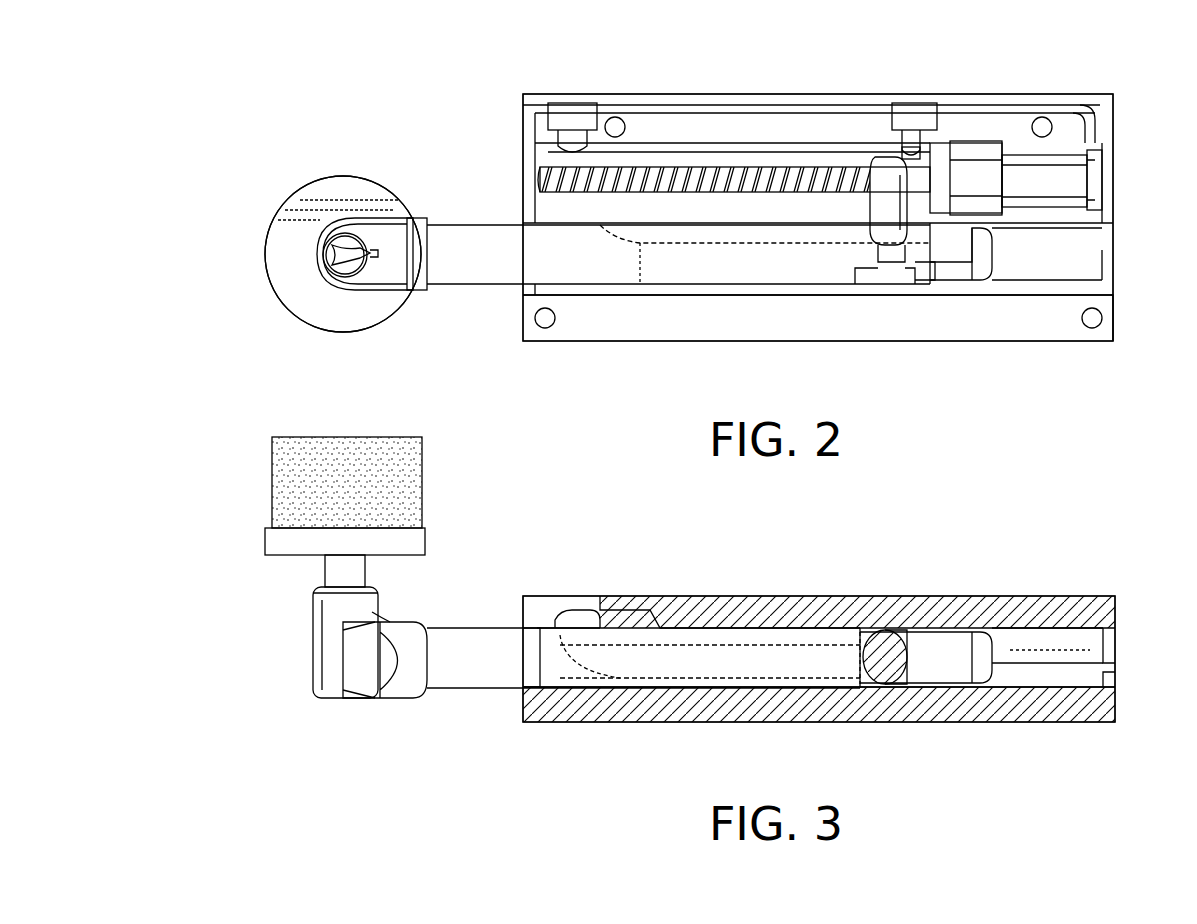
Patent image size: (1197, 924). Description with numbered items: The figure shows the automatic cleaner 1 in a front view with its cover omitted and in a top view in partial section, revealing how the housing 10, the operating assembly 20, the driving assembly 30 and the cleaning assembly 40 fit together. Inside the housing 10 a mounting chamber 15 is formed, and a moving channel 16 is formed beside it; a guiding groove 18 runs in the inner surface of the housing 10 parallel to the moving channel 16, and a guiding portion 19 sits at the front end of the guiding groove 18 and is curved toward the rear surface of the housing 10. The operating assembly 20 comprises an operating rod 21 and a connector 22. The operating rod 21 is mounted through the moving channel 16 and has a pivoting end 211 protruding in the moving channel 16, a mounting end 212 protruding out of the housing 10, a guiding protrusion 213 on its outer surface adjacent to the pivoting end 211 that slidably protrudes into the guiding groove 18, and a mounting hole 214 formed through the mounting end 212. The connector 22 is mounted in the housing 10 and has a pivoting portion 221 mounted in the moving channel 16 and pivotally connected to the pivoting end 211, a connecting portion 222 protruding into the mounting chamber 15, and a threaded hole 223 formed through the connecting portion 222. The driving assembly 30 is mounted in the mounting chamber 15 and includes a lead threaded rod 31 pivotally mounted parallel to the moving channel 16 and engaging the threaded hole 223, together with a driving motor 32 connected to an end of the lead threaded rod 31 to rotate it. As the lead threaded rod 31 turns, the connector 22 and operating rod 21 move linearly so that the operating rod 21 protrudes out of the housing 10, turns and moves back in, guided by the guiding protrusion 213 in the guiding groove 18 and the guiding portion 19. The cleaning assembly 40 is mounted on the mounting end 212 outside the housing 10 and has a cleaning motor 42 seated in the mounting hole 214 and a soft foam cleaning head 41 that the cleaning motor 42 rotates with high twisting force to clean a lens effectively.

In FIG. 2, the automatic cleaner 1 is at (830, 68).
In FIG. 3, the automatic cleaner 1 is at (1002, 550).
In FIG. 2, the housing 10 is at (702, 86).
In FIG. 3, the housing 10 is at (880, 592).
In FIG. 2, the mounting chamber 15 is at (552, 157).
In FIG. 2, the moving channel 16 is at (1005, 265).
In FIG. 3, the moving channel 16 is at (1022, 642).
In FIG. 3, the guiding groove 18 is at (672, 668).
In FIG. 3, the guiding portion 19 is at (560, 605).
In FIG. 2, the operating assembly 20 is at (752, 296).
In FIG. 3, the operating assembly 20 is at (777, 692).
In FIG. 2, the operating rod 21 is at (526, 263).
In FIG. 3, the operating rod 21 is at (478, 665).
In FIG. 2, the connector 22 is at (952, 268).
In FIG. 3, the connector 22 is at (950, 672).
In FIG. 2, the driving assembly 30 is at (1077, 136).
In FIG. 2, the lead threaded rod 31 is at (742, 165).
In FIG. 2, the driving motor 32 is at (1023, 157).
In FIG. 2, the cleaning assembly 40 is at (272, 187).
In FIG. 3, the cleaning assembly 40 is at (255, 515).
In FIG. 2, the cleaning head 41 is at (356, 190).
In FIG. 3, the cleaning head 41 is at (390, 483).
In FIG. 2, the cleaning motor 42 is at (332, 276).
In FIG. 2, the pivoting end 211 is at (874, 251).
In FIG. 2, the mounting end 212 is at (390, 268).
In FIG. 3, the mounting end 212 is at (395, 660).
In FIG. 2, the guiding protrusion 213 is at (855, 287).
In FIG. 3, the guiding protrusion 213 is at (845, 640).
In FIG. 2, the mounting hole 214 is at (326, 257).
In FIG. 2, the pivoting portion 221 is at (917, 284).
In FIG. 2, the connecting portion 222 is at (908, 150).
In FIG. 3, the connecting portion 222 is at (892, 676).
In FIG. 2, the threaded hole 223 is at (888, 170).